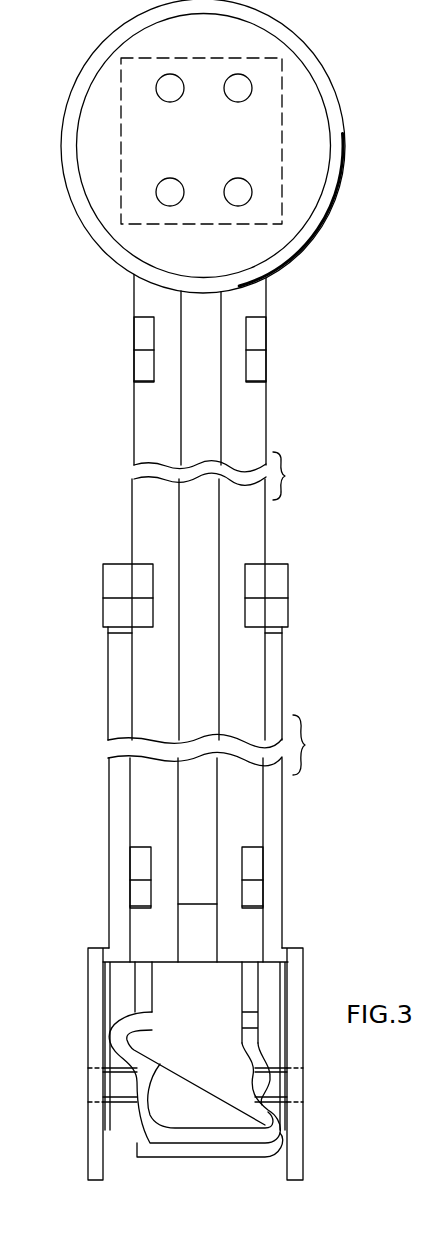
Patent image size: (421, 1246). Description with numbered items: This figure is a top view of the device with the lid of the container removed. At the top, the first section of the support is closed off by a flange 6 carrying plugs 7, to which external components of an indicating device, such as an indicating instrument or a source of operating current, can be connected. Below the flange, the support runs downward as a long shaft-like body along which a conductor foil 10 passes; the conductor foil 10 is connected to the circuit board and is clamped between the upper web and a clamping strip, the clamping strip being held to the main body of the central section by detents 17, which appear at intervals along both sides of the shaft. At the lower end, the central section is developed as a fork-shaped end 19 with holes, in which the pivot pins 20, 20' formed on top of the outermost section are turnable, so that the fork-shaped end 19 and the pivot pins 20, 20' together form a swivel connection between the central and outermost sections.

The flange 6 is at (313, 127).
The plugs 7 is at (162, 90).
The detents 17 is at (142, 367).
The conductor foil 10 is at (158, 995).
The fork-shaped end 19 is at (87, 1133).
The pivot pin 20 is at (90, 1083).
The pivot pin 20' is at (304, 1084).